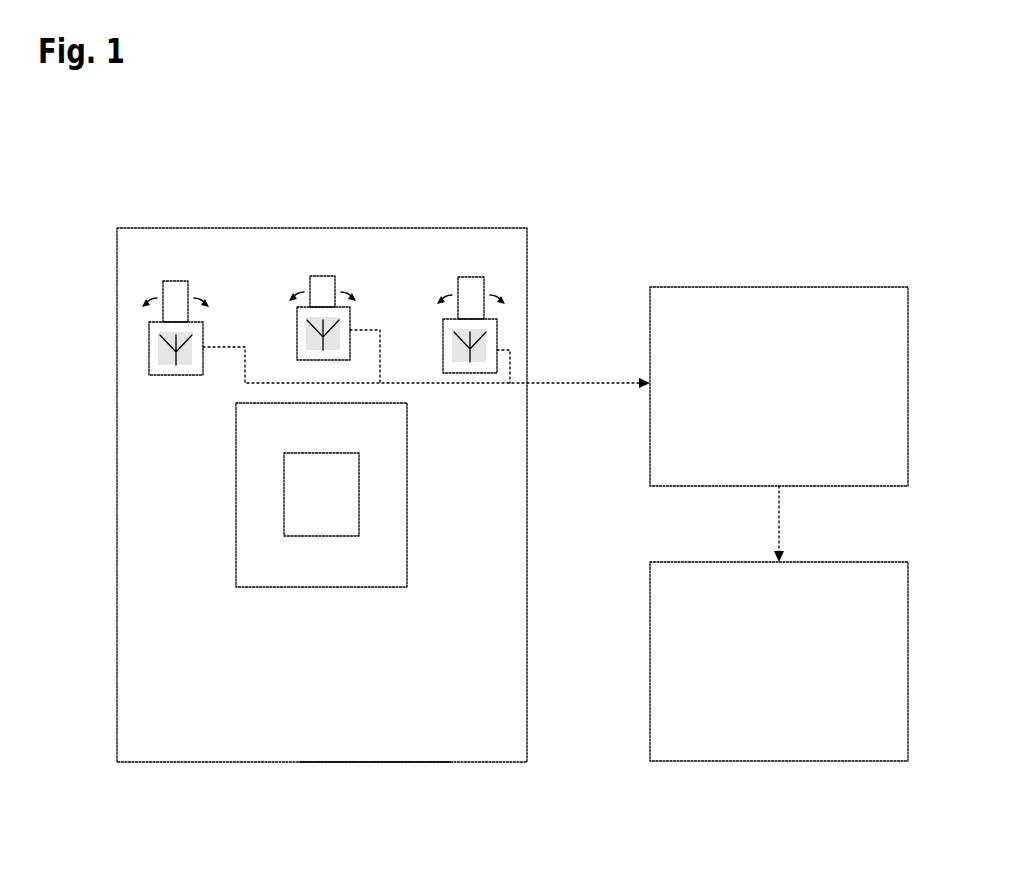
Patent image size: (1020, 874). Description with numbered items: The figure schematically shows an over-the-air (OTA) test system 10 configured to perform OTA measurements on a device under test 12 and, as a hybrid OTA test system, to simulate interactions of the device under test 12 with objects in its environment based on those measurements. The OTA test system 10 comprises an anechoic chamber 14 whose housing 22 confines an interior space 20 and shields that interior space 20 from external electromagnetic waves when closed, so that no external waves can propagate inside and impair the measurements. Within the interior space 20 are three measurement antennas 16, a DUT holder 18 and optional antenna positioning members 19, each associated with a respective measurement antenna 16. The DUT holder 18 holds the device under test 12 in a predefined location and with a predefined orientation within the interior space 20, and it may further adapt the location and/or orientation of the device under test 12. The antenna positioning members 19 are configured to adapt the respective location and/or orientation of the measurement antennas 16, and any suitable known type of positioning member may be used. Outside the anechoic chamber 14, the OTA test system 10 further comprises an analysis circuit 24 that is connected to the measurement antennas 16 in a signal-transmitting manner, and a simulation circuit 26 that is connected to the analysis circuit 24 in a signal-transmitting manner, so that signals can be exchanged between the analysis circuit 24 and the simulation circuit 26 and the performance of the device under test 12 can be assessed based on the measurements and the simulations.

The OTA test system 10 is at (641, 240).
The device under test 12 is at (284, 497).
The anechoic chamber 14 is at (197, 228).
The measurement antenna 16 is at (148, 350).
The DUT holder 18 is at (293, 588).
The antenna positioning member 19 is at (163, 290).
The interior space 20 is at (197, 680).
The housing 22 is at (373, 762).
The analysis circuit 24 is at (797, 287).
The simulation circuit 26 is at (792, 762).